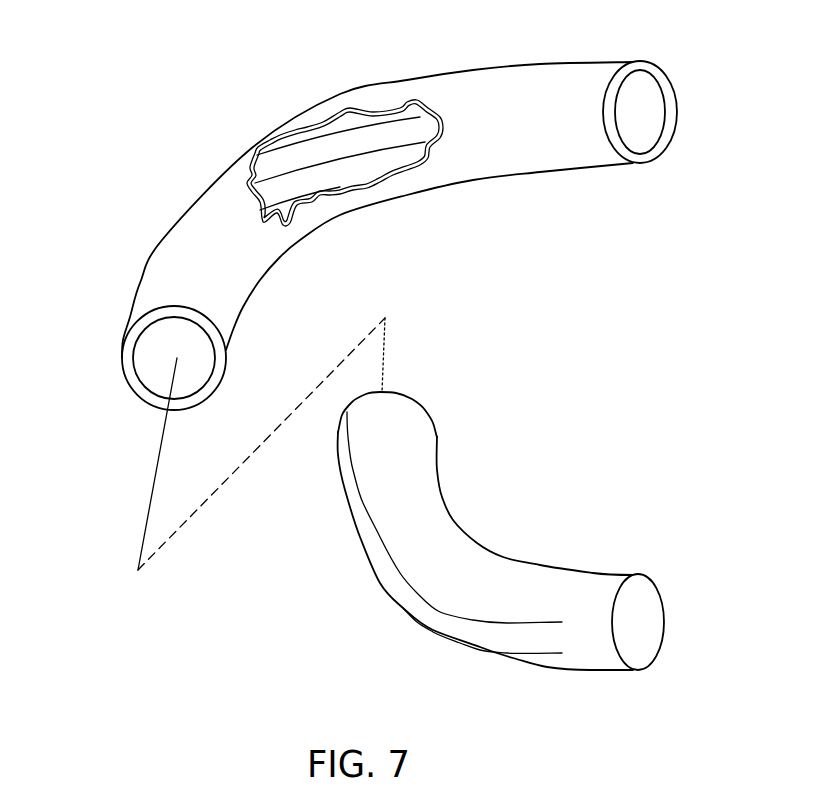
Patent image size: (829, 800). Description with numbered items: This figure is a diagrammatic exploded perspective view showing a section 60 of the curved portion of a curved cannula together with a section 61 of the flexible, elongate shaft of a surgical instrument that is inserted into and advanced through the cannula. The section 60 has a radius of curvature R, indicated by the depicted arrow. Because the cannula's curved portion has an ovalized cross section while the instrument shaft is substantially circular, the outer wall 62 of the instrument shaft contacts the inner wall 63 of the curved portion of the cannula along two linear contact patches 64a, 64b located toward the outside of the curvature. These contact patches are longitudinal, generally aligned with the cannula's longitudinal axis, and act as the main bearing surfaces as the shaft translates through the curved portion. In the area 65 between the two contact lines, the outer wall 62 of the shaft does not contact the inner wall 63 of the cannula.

The section of the curved portion of the curved cannula 60 is at (537, 78).
The section of the flexible, elongate shaft of a surgical instrument 61 is at (575, 590).
The outer wall of the instrument shaft 62 is at (583, 645).
The inner wall of the curved portion of the cannula 63 is at (141, 358).
The linear contact patch 64a is at (252, 165).
The linear contact patch 64b is at (345, 167).
The area between the two contact lines 65 is at (380, 145).
The radius of curvature R is at (593, 170).